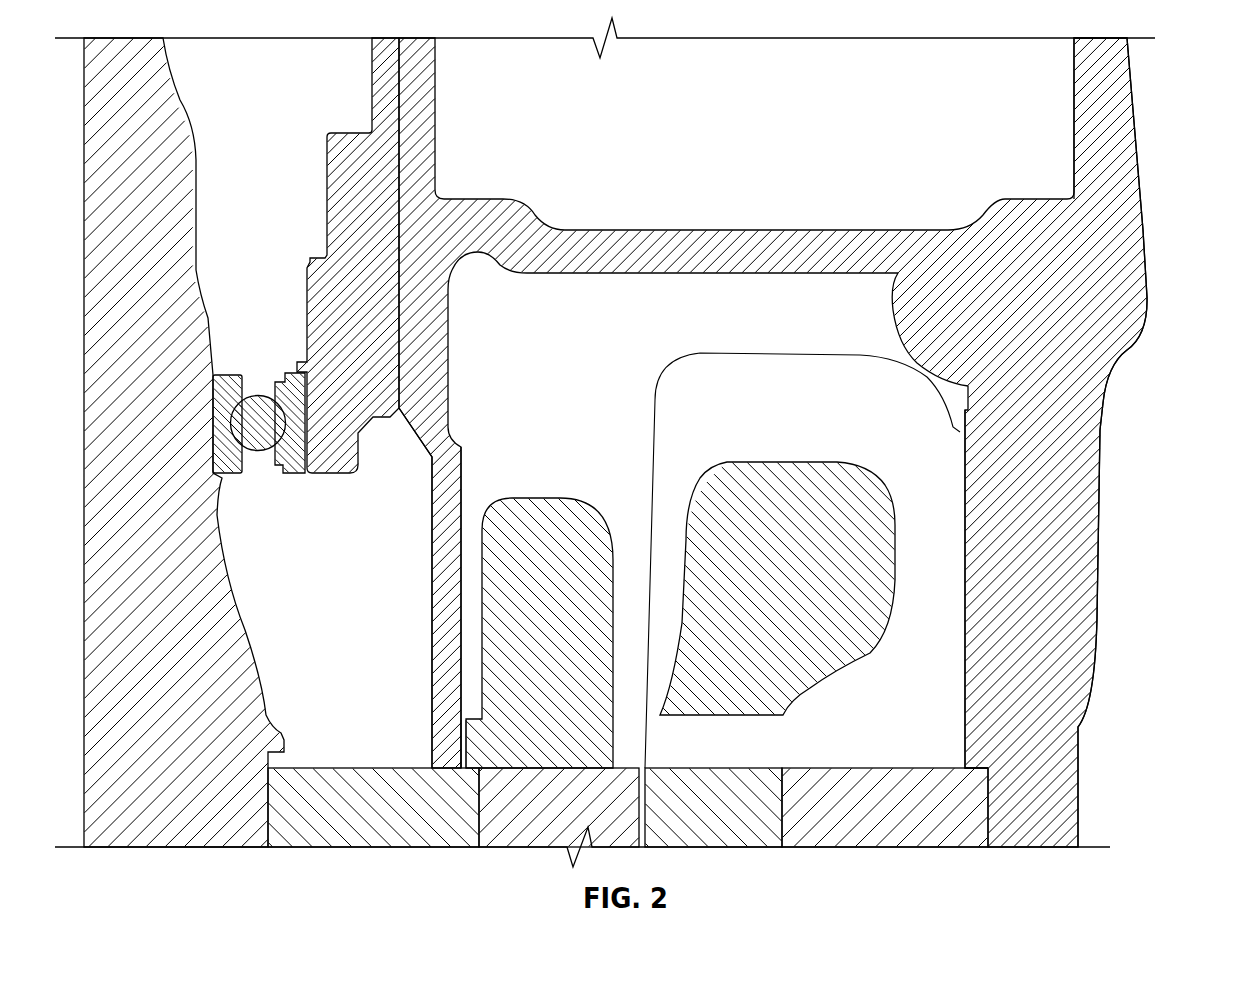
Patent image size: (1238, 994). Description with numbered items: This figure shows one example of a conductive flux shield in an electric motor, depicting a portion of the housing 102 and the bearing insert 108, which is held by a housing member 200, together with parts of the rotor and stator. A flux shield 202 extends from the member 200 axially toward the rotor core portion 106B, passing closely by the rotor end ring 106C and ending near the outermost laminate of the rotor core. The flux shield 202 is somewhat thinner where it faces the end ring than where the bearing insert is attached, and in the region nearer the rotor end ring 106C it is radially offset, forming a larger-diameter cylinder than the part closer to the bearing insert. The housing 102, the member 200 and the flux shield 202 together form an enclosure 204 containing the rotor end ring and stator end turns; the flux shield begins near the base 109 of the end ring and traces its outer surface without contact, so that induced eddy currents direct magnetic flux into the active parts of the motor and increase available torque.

The housing 102 is at (1099, 475).
The bearing insert 108 is at (222, 375).
The base of the end ring 109 is at (465, 772).
The housing member 200 is at (758, 230).
The flux shield 202 is at (431, 598).
The enclosure 204 is at (656, 345).
The rotor core portion 106B is at (347, 770).
The rotor end ring 106C is at (530, 498).